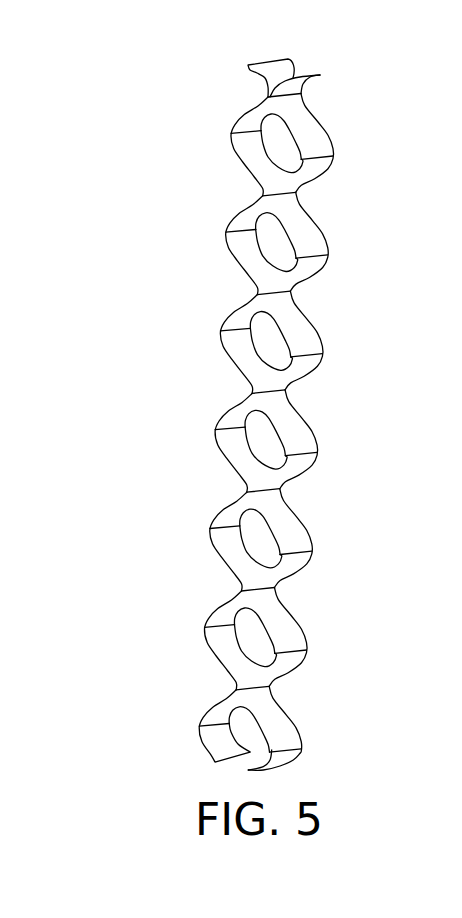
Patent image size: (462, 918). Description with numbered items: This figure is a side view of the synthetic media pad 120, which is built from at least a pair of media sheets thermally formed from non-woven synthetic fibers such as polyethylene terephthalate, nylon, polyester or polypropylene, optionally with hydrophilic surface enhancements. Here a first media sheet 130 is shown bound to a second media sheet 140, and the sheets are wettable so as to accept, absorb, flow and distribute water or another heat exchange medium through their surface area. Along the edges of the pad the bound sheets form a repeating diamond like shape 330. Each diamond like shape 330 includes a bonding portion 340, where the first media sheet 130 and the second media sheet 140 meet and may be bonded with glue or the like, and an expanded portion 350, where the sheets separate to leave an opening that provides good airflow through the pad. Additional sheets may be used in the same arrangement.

The synthetic media pad 120 is at (188, 62).
The first media sheet 130 is at (232, 135).
The second media sheet 140 is at (320, 128).
The diamond like shape 330 is at (318, 226).
The bonding portion 340 is at (291, 290).
The expanded portion 350 is at (323, 352).